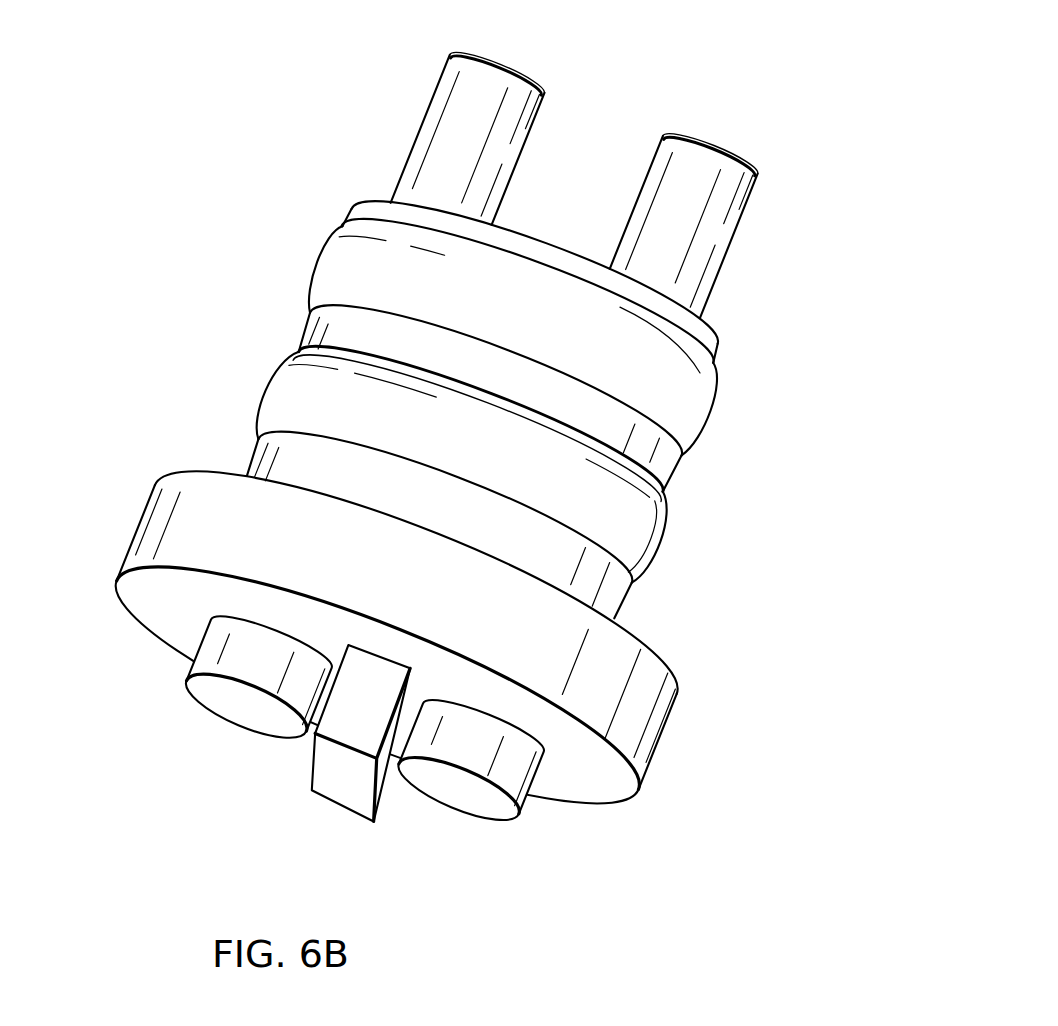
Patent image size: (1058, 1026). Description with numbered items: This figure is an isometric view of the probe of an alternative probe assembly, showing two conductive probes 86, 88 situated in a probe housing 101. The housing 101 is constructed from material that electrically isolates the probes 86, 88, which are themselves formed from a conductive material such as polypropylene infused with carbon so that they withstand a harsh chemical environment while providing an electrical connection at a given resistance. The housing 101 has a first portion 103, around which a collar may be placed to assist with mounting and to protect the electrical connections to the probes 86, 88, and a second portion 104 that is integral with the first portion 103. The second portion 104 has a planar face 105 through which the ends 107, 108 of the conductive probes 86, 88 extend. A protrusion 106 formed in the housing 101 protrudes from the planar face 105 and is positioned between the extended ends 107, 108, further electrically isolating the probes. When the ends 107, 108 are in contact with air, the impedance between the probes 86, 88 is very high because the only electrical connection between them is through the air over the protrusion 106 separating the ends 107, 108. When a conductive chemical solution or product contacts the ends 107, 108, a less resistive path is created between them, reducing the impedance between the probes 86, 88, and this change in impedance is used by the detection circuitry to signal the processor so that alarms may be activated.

The probe housing 101 is at (445, 459).
The first portion of the housing 103 is at (644, 445).
The second portion of the housing 104 is at (178, 539).
The planar face 105 is at (600, 783).
The protrusion 106 is at (326, 778).
The end of conductive probe 107 is at (208, 693).
The end of conductive probe 108 is at (480, 793).
The conductive probe 86 is at (444, 98).
The conductive probe 88 is at (731, 193).